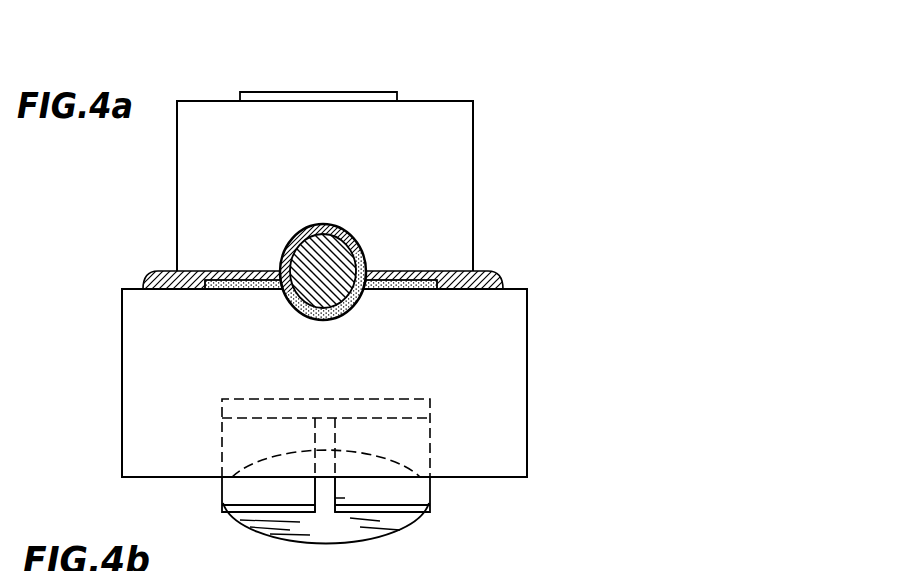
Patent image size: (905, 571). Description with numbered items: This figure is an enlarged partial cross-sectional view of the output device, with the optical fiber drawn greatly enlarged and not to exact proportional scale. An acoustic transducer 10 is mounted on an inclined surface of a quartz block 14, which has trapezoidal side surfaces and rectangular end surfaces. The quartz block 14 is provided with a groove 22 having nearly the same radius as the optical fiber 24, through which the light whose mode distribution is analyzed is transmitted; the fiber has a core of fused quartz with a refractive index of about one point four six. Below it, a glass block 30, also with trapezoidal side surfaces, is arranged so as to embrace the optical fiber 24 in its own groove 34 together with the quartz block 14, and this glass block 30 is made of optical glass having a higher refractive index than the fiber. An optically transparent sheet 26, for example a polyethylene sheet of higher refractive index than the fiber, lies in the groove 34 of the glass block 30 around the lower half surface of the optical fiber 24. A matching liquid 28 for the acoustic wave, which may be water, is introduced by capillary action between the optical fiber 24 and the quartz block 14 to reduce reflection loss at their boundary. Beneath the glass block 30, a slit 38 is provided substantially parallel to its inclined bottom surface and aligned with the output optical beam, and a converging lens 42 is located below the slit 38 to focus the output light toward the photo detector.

The acoustic transducer 10 is at (397, 98).
The quartz block 14 is at (456, 132).
The groove 22 is at (354, 243).
The optical fiber 24 is at (361, 262).
The optically transparent sheet 26 is at (437, 290).
The matching liquid 28 is at (497, 276).
The glass block 30 is at (507, 405).
The groove 34 is at (353, 311).
The slit 38 is at (323, 510).
The converging lens 42 is at (395, 523).